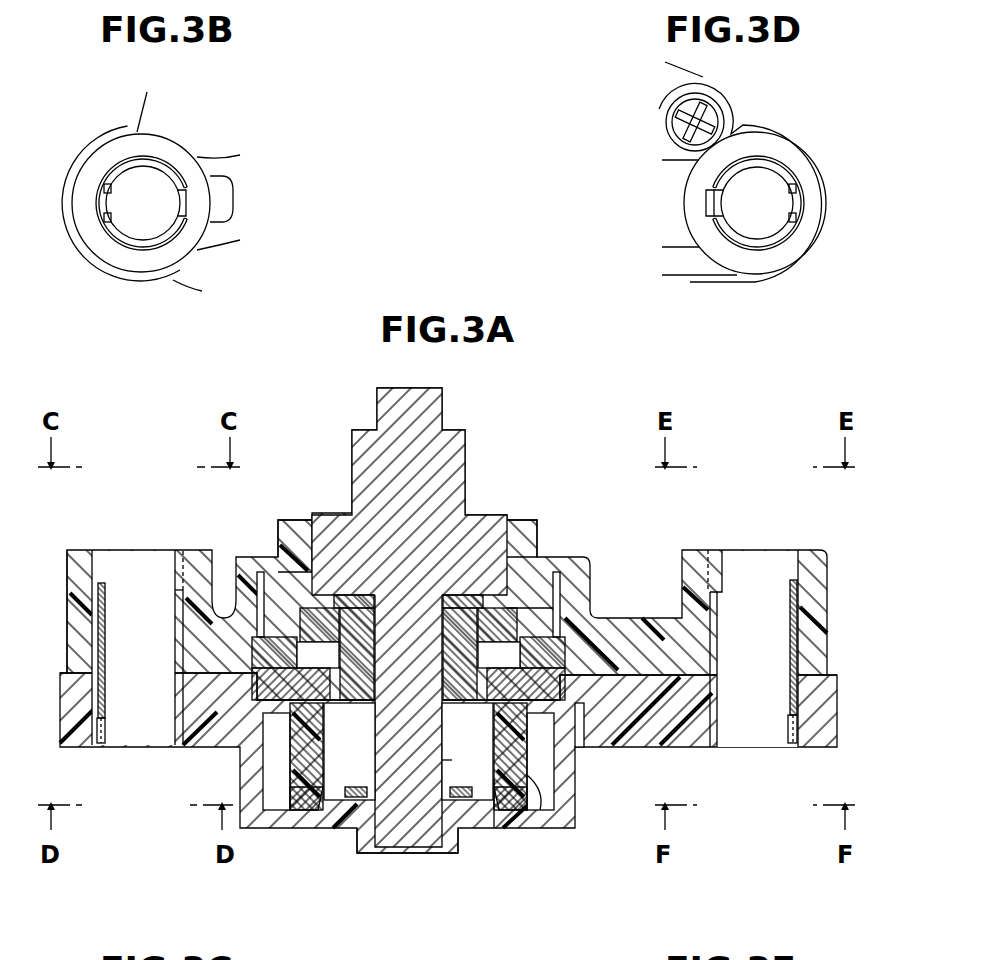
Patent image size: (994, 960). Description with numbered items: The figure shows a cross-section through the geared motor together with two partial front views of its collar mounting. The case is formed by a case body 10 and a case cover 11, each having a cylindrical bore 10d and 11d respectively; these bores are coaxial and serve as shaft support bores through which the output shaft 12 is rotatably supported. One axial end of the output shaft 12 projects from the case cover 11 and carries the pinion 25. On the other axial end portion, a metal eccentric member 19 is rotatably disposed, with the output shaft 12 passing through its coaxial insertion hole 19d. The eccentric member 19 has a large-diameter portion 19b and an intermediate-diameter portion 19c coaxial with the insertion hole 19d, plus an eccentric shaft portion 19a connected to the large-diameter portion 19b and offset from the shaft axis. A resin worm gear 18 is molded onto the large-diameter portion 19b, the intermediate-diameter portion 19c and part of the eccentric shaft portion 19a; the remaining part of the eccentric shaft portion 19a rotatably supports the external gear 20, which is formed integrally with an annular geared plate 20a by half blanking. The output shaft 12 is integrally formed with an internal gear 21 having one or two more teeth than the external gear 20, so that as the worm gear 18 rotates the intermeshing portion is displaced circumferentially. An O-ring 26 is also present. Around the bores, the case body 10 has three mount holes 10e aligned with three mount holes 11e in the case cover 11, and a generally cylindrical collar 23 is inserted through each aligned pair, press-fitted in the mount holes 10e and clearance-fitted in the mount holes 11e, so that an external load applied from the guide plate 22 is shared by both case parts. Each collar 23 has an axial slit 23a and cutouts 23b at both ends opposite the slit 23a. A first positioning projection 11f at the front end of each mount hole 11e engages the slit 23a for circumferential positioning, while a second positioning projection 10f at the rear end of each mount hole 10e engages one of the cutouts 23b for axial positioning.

In FIG. 3A, the case body 10 is at (627, 747).
In FIG. 3A, the cylindrical bore 10d is at (432, 808).
In FIG. 3A, the mount holes 10e is at (170, 708).
In FIG. 3A, the second positioning projection 10f is at (113, 720).
In FIG. 3A, the case cover 11 is at (660, 633).
In FIG. 3A, the cylindrical bore 11d is at (318, 550).
In FIG. 3A, the mount holes 11e is at (170, 617).
In FIG. 3B, the first positioning projection 11f is at (183, 202).
In FIG. 3D, the first positioning projection 11f is at (718, 205).
In FIG. 3A, the first positioning projection 11f is at (177, 570).
In FIG. 3A, the output shaft 12 is at (400, 835).
In FIG. 3A, the worm gear 18 is at (272, 795).
In FIG. 3A, the eccentric member 19 is at (305, 812).
In FIG. 3A, the eccentric shaft portion 19a is at (457, 633).
In FIG. 3A, the large-diameter portion 19b is at (548, 812).
In FIG. 3A, the intermediate-diameter portion 19c is at (500, 828).
In FIG. 3A, the insertion hole 19d is at (432, 768).
In FIG. 3A, the external gear 20 is at (552, 597).
In FIG. 3A, the geared plate 20a is at (523, 608).
In FIG. 3A, the internal gear 21 is at (543, 583).
In FIG. 3A, the guide plate 22 is at (578, 747).
In FIG. 3B, the collar 23 is at (137, 240).
In FIG. 3D, the collar 23 is at (760, 240).
In FIG. 3A, the collar 23 is at (106, 633).
In FIG. 3B, the slit 23a is at (183, 188).
In FIG. 3D, the slit 23a is at (713, 190).
In FIG. 3B, the cutouts 23b is at (95, 210).
In FIG. 3D, the cutouts 23b is at (800, 212).
In FIG. 3A, the cutouts 23b is at (102, 553).
In FIG. 3A, the pinion 25 is at (458, 447).
In FIG. 3A, the O-ring 26 is at (355, 800).